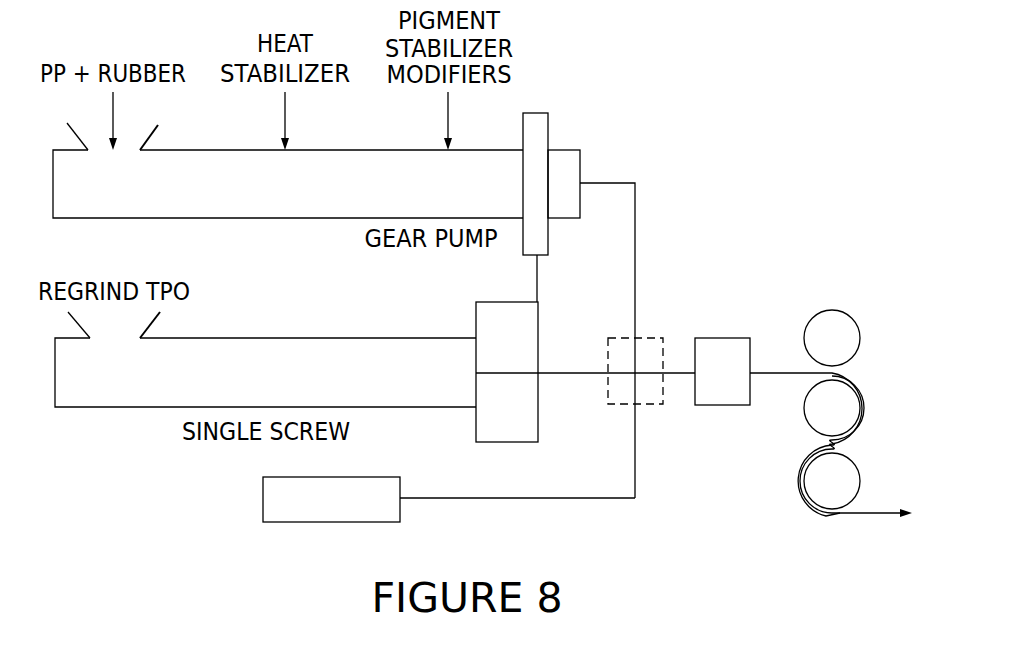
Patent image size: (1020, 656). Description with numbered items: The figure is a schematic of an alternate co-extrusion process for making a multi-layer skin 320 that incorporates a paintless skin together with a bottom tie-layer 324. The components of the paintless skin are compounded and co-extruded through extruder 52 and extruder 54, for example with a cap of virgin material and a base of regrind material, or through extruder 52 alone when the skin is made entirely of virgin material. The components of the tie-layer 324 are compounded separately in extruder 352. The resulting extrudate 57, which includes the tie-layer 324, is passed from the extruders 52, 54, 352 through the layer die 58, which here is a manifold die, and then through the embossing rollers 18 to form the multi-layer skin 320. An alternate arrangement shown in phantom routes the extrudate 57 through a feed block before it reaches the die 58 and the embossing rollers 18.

The extruder 52 is at (348, 193).
The extruder 54 is at (348, 378).
The extrudate 57 is at (635, 287).
The layer die 58 is at (717, 338).
The embossing rollers 18 is at (834, 310).
The multi-layer skin 320 is at (645, 404).
The bottom tie-layer 324 is at (577, 498).
The extruder 352 is at (331, 499).